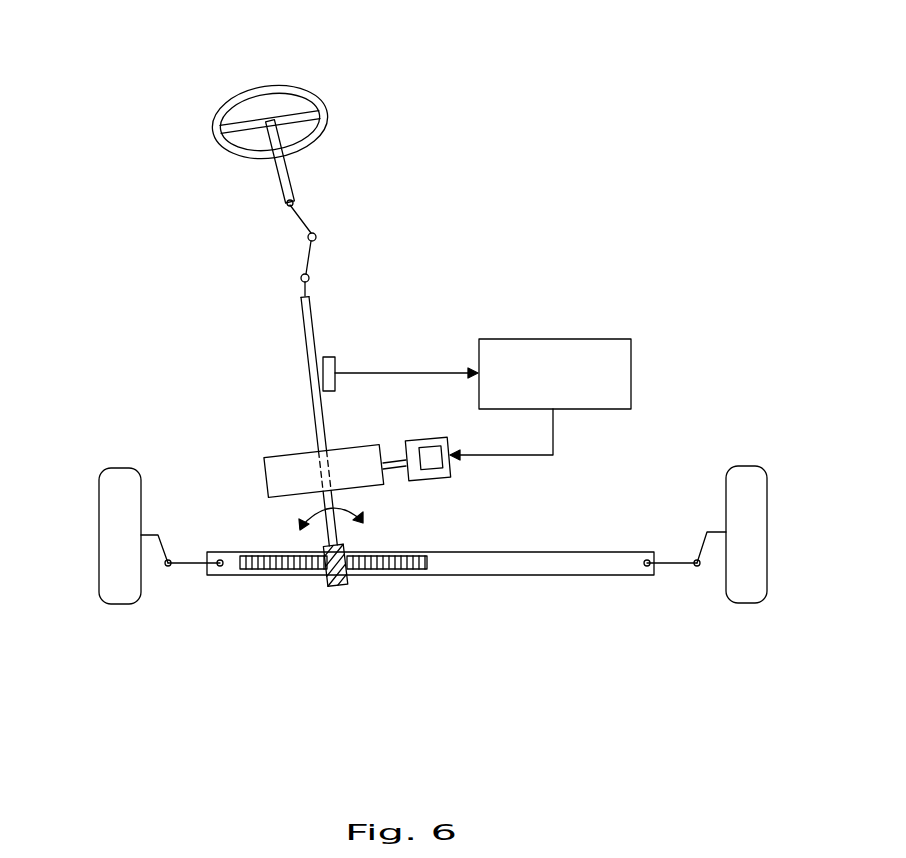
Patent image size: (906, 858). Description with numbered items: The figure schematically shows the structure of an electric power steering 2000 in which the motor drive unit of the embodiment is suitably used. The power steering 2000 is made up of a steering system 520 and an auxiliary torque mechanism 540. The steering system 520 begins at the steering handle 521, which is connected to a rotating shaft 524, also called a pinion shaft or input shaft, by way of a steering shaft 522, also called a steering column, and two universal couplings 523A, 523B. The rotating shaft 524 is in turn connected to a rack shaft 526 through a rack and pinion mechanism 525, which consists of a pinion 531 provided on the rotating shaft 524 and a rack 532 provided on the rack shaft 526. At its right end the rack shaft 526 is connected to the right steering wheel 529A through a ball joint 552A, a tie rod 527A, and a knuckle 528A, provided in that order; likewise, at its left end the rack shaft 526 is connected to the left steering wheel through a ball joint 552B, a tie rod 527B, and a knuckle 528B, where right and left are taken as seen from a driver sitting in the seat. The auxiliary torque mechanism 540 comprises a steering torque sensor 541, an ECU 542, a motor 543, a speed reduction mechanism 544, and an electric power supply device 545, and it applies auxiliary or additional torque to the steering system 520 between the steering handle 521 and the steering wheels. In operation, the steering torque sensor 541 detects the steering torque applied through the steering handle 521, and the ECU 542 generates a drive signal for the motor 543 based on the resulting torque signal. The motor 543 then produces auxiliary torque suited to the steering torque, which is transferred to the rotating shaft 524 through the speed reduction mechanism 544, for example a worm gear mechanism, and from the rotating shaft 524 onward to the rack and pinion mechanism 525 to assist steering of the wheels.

The electric power steering 2000 is at (470, 110).
The steering system 520 is at (270, 304).
The steering handle 521 is at (222, 110).
The steering shaft 522 is at (292, 170).
The universal coupling 523A is at (317, 236).
The universal coupling 523B is at (310, 277).
The rotating shaft 524 is at (320, 323).
The rack and pinion mechanism 525 is at (350, 594).
The rack shaft 526 is at (473, 565).
The tie rod 527A is at (182, 562).
The tie rod 527B is at (680, 561).
The knuckle 528A is at (155, 534).
The knuckle 528B is at (705, 534).
The right steering wheel 529A is at (120, 594).
The pinion 531 is at (328, 580).
The rack 532 is at (278, 570).
The auxiliary torque mechanism 540 is at (508, 306).
The steering torque sensor 541 is at (338, 358).
The ECU 542 is at (600, 340).
The motor 543 is at (430, 438).
The speed reduction mechanism 544 is at (268, 456).
The electric power supply device 545 is at (434, 464).
The ball joint 552A is at (217, 570).
The ball joint 552B is at (645, 567).